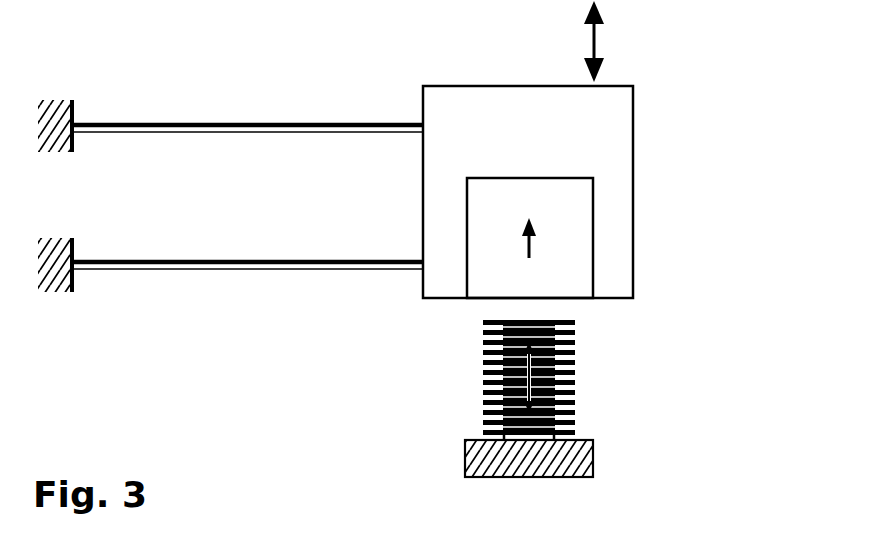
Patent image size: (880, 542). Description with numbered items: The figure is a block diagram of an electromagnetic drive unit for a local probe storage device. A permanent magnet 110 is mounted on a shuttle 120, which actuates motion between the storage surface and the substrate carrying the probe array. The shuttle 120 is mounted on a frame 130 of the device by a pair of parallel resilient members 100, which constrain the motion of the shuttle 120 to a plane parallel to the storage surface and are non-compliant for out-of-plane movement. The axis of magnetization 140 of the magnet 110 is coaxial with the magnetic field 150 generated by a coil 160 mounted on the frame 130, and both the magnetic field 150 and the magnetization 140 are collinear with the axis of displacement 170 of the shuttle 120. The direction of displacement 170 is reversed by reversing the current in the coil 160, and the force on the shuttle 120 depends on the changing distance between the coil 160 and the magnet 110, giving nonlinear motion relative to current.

The resilient members 100 is at (198, 262).
The permanent magnet 110 is at (577, 202).
The shuttle 120 is at (613, 147).
The frame 130 is at (65, 281).
The axis of magnetization 140 is at (532, 250).
The magnetic field 150 is at (560, 360).
The coil 160 is at (575, 392).
The axis of displacement 170 is at (596, 38).